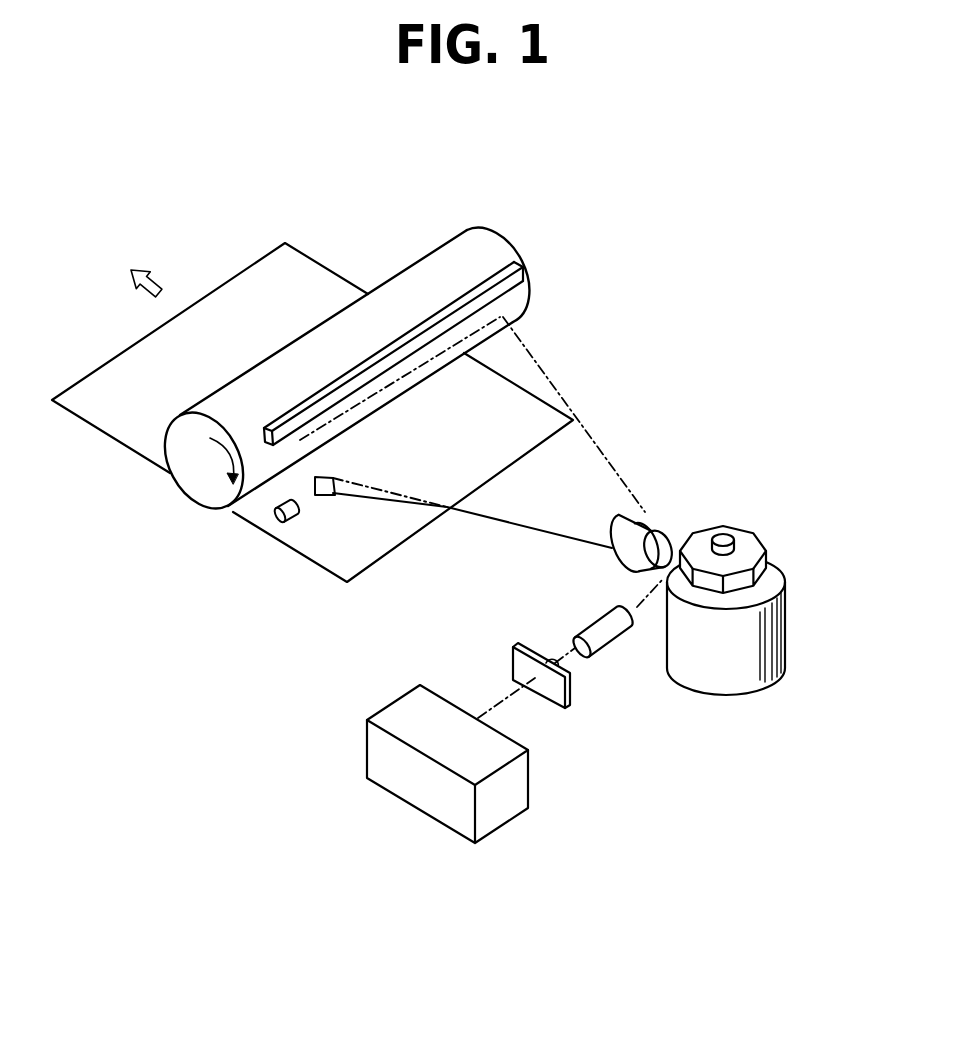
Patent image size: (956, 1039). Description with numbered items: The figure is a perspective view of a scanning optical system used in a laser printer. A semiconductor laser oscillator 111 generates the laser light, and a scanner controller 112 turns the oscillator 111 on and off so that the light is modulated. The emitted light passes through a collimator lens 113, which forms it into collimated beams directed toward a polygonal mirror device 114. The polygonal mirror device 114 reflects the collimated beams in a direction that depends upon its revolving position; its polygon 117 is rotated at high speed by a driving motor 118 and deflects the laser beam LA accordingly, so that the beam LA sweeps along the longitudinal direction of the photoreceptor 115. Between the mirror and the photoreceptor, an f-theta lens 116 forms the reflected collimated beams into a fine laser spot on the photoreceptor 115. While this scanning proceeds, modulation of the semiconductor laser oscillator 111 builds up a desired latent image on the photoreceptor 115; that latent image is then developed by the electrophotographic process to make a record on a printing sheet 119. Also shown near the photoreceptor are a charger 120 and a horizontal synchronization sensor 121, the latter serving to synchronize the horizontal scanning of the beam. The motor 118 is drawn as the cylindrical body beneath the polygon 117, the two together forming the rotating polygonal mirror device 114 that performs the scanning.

The semiconductor laser oscillator 111 is at (558, 713).
The scanner controller 112 is at (435, 807).
The collimator lens 113 is at (605, 652).
The polygonal mirror device 114 is at (786, 592).
The photoreceptor 115 is at (388, 273).
The f-theta lens 116 is at (632, 566).
The polygon 117 is at (725, 524).
The scanner motor 118 is at (745, 637).
The printing sheet 119 is at (228, 288).
The charger 120 is at (522, 267).
The horizontal synchronization sensor 121 is at (297, 527).
The laser beam LA is at (590, 433).